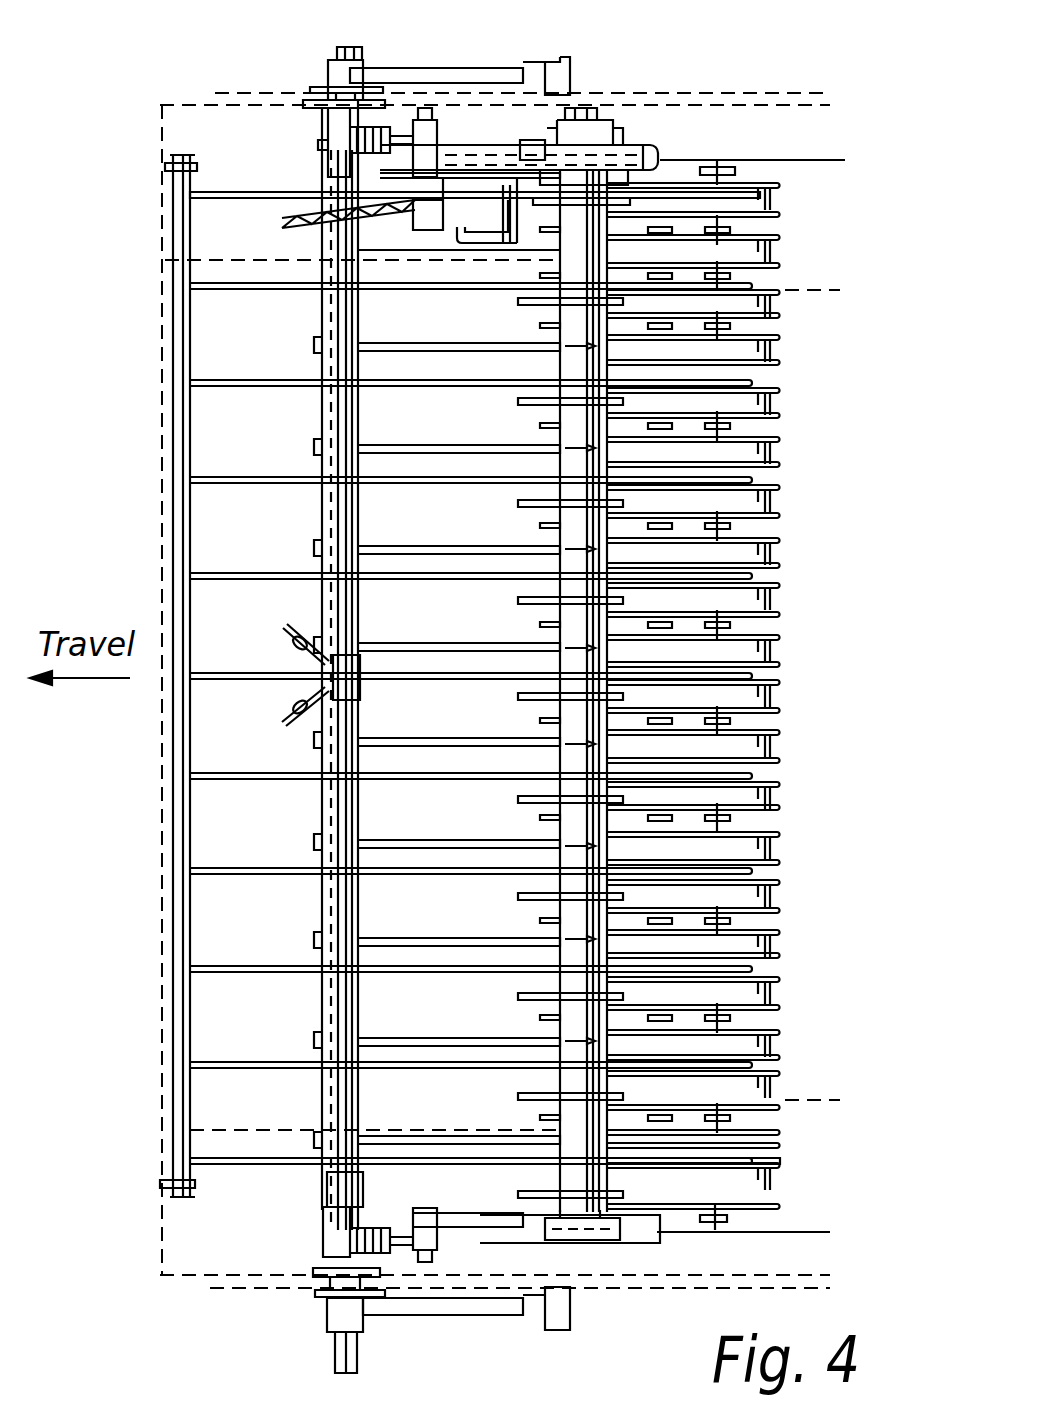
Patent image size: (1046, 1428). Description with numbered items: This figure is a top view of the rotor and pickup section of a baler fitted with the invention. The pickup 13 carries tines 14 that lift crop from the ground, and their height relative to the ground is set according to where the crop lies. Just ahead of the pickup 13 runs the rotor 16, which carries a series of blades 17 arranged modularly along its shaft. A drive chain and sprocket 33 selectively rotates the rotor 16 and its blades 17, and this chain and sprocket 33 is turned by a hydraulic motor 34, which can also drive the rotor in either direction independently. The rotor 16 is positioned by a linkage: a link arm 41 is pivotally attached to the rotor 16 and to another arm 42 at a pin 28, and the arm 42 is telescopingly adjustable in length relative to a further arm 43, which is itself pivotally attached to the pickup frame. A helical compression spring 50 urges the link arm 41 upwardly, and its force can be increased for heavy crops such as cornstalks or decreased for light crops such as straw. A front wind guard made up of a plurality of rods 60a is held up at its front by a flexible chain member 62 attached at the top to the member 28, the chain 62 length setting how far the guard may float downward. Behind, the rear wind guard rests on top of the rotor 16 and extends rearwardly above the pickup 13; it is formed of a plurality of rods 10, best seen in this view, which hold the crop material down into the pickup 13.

The rods 10 is at (292, 295).
The pickup 13 is at (780, 888).
The tines 14 is at (735, 919).
The rotor 16 is at (530, 612).
The blades 17 is at (522, 400).
The pin 28 is at (358, 508).
The drive chain and sprocket 33 is at (530, 147).
The hydraulic motor 34 is at (485, 242).
The link arm 41 is at (517, 1196).
The arm 42 is at (412, 72).
The arm 43 is at (530, 72).
The helical compression spring 50 is at (338, 130).
The rods 60a is at (400, 740).
The flexible chain member 62 is at (300, 712).